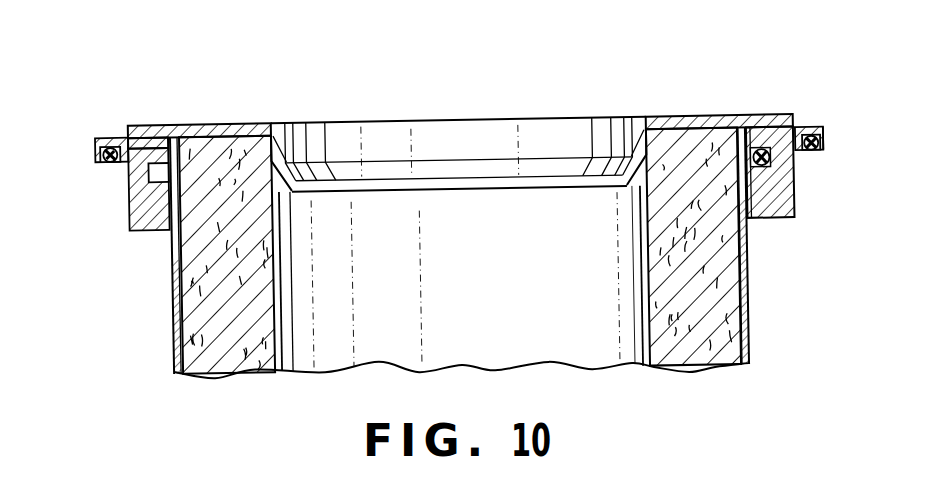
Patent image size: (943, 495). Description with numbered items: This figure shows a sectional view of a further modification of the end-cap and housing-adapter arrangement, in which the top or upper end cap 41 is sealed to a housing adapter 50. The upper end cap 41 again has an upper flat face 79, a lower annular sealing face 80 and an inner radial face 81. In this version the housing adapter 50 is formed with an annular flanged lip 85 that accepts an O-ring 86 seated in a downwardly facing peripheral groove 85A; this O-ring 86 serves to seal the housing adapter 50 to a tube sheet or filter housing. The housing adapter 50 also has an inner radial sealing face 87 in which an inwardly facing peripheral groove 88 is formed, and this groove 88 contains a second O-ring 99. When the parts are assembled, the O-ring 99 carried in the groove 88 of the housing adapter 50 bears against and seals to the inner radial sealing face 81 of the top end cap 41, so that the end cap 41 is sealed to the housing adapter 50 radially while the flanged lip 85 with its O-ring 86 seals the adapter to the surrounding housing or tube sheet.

The upper end cap 41 is at (699, 113).
The upper flat face 79 is at (158, 127).
The lower annular sealing face 80 is at (140, 142).
The inner radial face 81 is at (167, 186).
The annular flanged lip 85 is at (817, 128).
The downwardly facing peripheral groove 85A is at (794, 122).
The O-ring 86 is at (824, 149).
The inner radial sealing face 87 is at (157, 147).
The inwardly facing peripheral groove 88 is at (768, 172).
The O-ring 99 is at (755, 152).
The housing adapter 50 is at (797, 186).